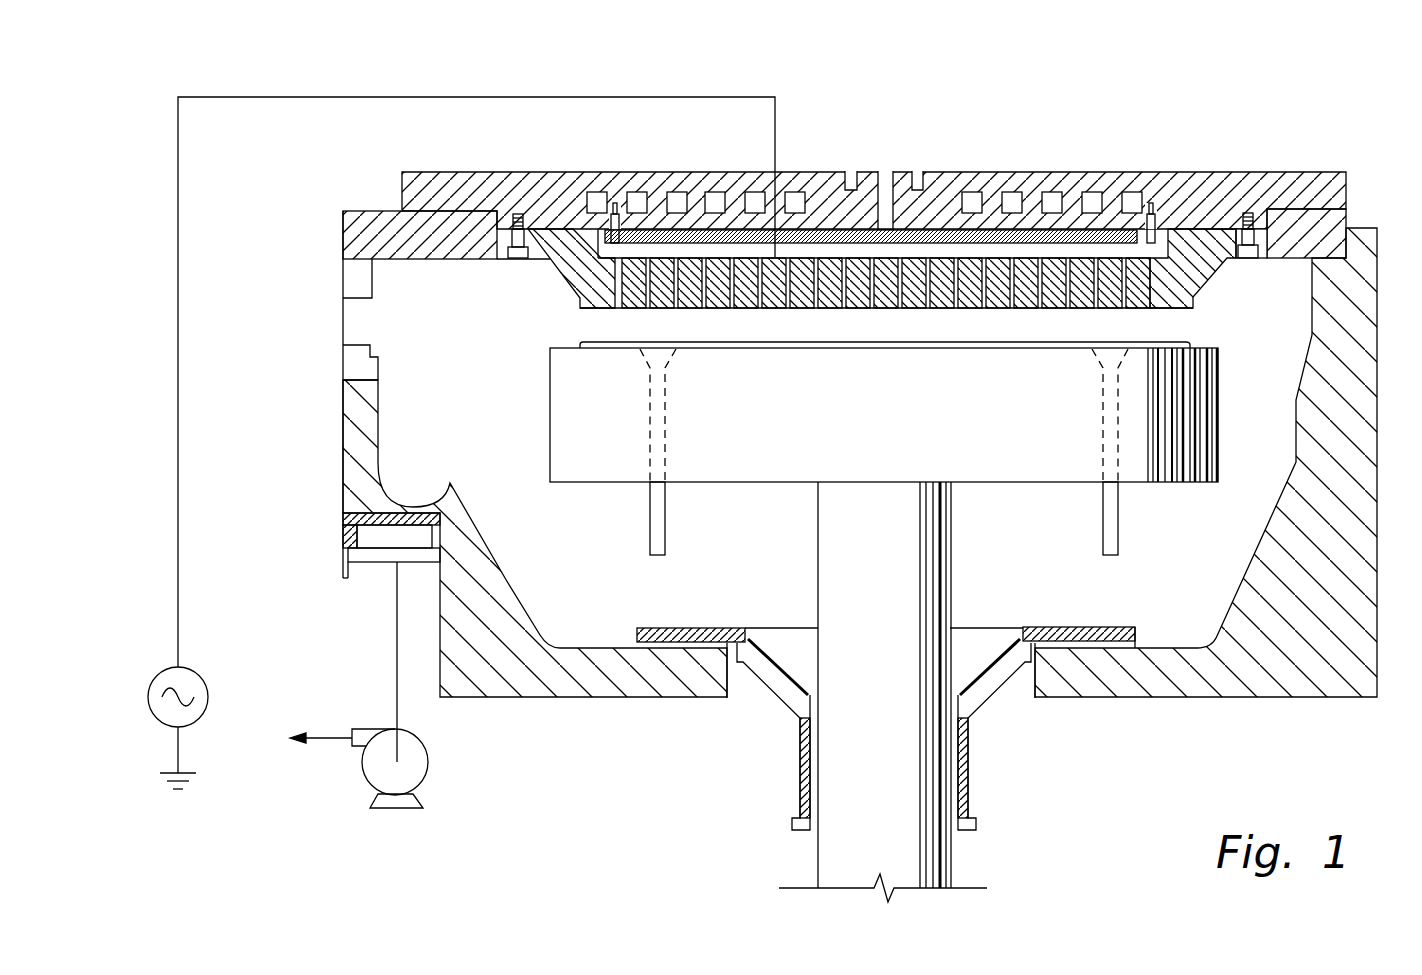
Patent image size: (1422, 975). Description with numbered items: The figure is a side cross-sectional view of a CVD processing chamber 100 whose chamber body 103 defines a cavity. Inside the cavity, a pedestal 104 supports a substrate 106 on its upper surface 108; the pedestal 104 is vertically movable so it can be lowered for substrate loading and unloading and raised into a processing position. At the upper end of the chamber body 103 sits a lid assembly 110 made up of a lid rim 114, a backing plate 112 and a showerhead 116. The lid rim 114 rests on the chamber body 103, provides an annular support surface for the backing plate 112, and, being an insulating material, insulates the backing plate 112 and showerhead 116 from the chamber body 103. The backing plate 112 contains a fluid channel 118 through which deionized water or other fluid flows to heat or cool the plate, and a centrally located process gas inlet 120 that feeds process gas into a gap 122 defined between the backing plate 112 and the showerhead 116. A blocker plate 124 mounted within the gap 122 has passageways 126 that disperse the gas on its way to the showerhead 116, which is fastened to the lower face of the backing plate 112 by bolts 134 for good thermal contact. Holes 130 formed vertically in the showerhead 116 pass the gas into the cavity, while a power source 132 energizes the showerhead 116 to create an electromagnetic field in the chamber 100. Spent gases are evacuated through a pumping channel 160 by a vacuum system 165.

The CVD processing chamber 100 is at (648, 748).
The chamber body 103 is at (1303, 699).
The pedestal 104 is at (750, 486).
The substrate 106 is at (870, 343).
The upper surface 108 is at (1205, 345).
The lid assembly 110 is at (1318, 141).
The backing plate 112 is at (483, 172).
The lid rim 114 is at (373, 211).
The showerhead 116 is at (560, 282).
The fluid channel 118 is at (597, 198).
The process gas inlet 120 is at (884, 182).
The gap 122 is at (944, 250).
The blocker plate 124 is at (823, 236).
The passageways 126 is at (1092, 238).
The holes 130 is at (1150, 293).
The power source 132 is at (204, 672).
The bolts 134 is at (518, 214).
The pumping channel 160 is at (433, 338).
The vacuum system 165 is at (428, 757).